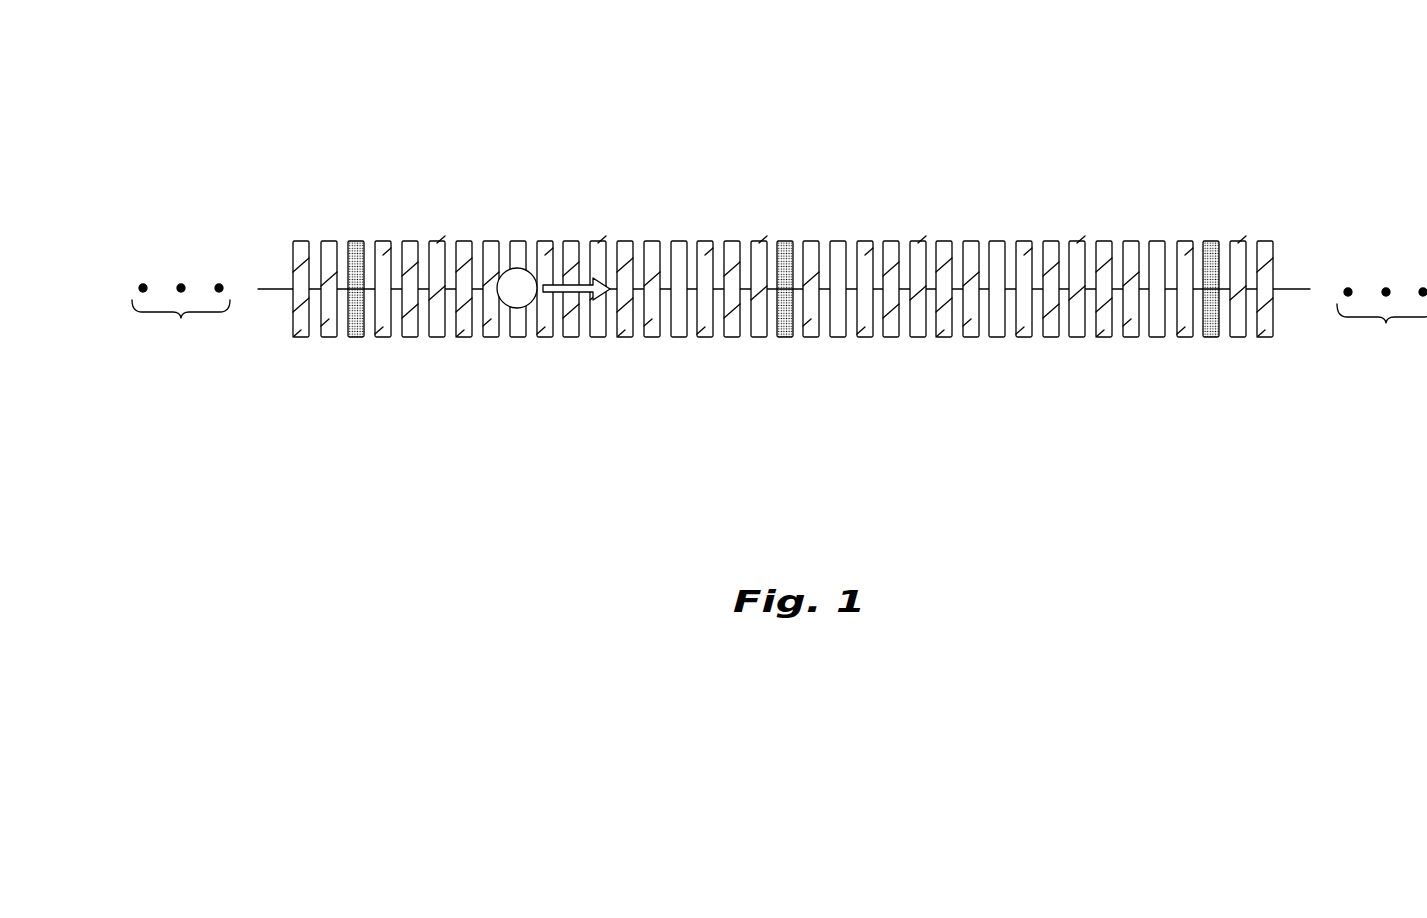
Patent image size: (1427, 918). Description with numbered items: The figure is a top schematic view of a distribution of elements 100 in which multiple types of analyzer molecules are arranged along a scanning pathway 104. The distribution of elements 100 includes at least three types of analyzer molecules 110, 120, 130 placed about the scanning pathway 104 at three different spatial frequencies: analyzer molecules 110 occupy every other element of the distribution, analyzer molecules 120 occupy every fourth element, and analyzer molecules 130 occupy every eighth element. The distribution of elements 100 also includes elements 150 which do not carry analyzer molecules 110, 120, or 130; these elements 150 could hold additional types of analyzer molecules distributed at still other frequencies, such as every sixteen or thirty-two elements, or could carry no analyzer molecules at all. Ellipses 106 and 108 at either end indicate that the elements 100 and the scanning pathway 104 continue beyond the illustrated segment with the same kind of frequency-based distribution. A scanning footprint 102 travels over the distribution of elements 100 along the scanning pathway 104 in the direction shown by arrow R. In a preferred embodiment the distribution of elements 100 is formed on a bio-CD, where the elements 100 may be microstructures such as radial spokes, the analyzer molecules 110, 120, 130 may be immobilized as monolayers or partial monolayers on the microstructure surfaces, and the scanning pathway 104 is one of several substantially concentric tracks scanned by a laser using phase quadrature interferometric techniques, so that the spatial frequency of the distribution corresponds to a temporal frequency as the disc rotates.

The distribution of elements 100 is at (403, 100).
The scanning footprint 102 is at (506, 268).
The scanning pathway 104 is at (272, 288).
The ellipsis 106 is at (181, 318).
The ellipsis 108 is at (1386, 323).
The analyzer molecules 110 is at (335, 241).
The analyzer molecules 120 is at (297, 337).
The analyzer molecules 130 is at (356, 337).
The elements 150 is at (463, 337).
The arrow R is at (560, 285).